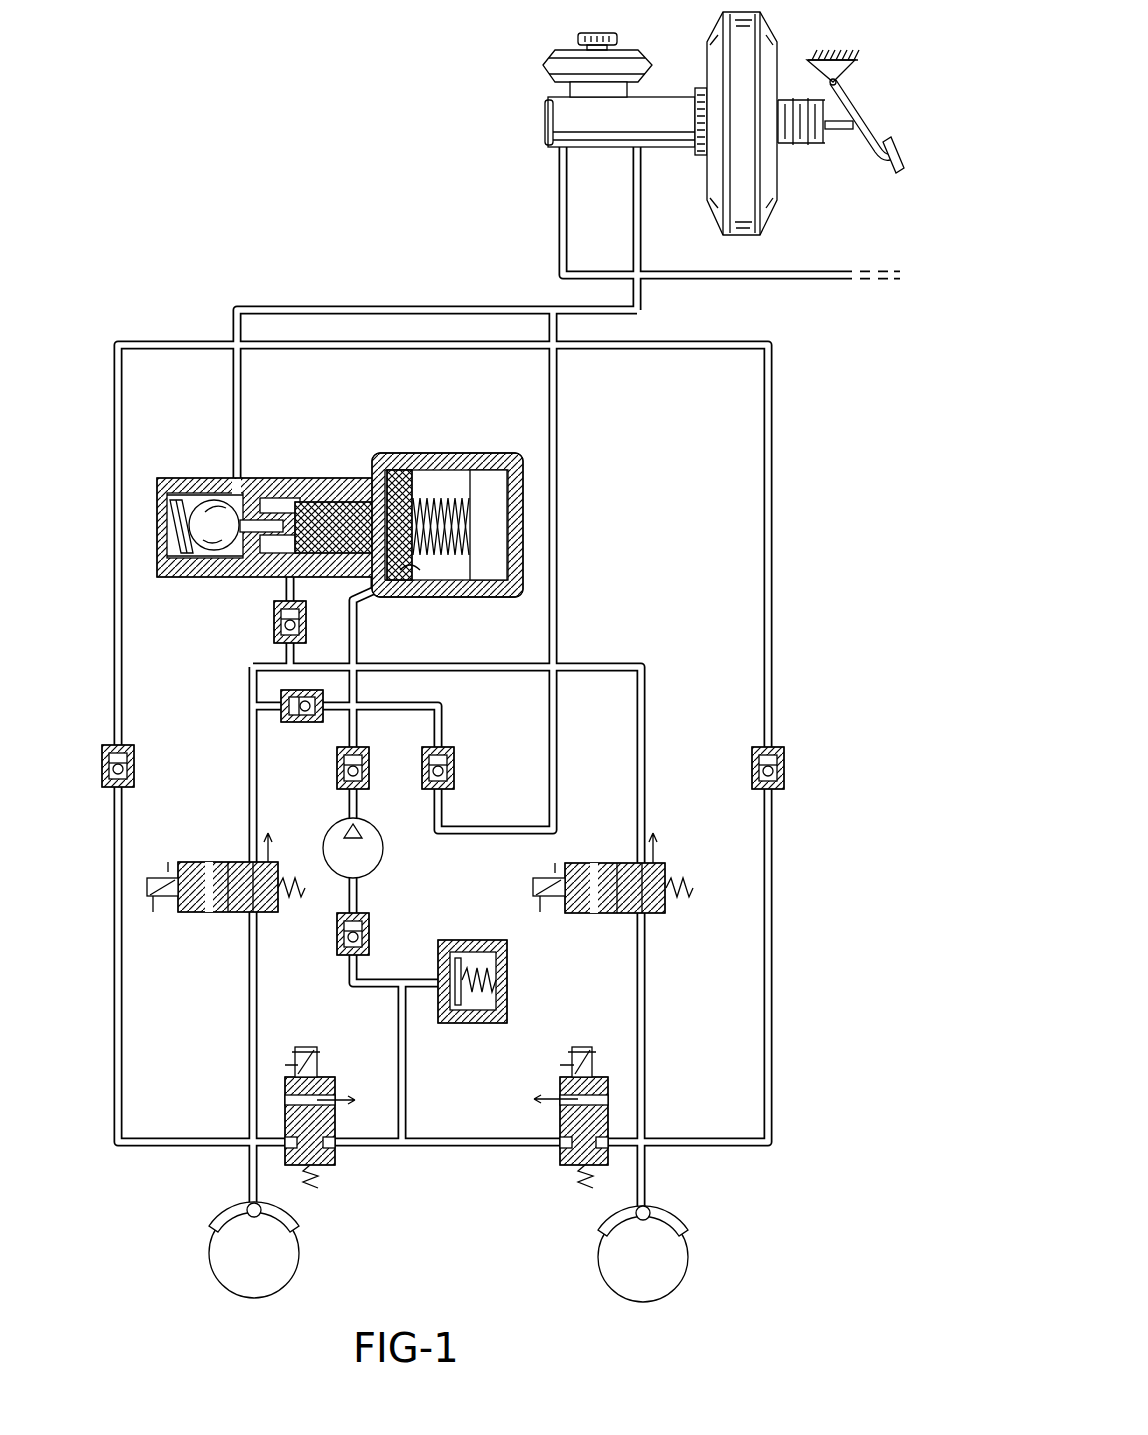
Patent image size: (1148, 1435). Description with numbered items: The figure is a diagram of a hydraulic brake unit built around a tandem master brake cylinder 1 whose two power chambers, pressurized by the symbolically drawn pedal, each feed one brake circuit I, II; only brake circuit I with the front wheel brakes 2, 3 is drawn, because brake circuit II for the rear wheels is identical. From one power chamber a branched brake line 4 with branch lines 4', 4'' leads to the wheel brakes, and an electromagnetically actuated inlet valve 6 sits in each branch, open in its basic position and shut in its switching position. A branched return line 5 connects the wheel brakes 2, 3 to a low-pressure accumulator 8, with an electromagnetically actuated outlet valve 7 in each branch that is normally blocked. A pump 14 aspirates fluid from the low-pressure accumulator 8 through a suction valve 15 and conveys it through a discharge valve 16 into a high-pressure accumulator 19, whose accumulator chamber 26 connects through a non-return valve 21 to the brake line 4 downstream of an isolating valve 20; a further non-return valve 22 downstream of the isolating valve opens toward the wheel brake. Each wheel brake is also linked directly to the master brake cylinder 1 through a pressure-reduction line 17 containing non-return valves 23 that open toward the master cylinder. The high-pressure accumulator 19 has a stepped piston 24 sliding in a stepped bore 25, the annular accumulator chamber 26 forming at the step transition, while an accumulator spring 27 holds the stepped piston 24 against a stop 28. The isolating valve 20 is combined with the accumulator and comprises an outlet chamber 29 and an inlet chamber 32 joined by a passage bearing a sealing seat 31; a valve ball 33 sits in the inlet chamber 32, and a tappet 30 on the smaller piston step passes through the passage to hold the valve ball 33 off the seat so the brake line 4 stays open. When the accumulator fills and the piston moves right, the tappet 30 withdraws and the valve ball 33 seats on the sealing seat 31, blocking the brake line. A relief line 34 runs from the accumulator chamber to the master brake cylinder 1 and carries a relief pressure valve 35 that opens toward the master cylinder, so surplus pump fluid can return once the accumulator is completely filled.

The tandem master brake cylinder 1 is at (545, 112).
The front wheel brake 2 is at (300, 1265).
The front wheel brake 3 is at (690, 1262).
The brake line 4 is at (437, 363).
The branch line 4' is at (225, 935).
The branch line 4'' is at (447, 936).
The return line 5 is at (405, 1085).
The inlet valve 6 is at (225, 862).
The outlet valve 7 is at (335, 1124).
The low-pressure accumulator 8 is at (476, 942).
The pump 14 is at (383, 862).
The suction valve 15 is at (370, 926).
The discharge valve 16 is at (366, 775).
The pressure-reduction line 17 is at (123, 1002).
The high-pressure accumulator 19 is at (456, 518).
The isolating valve 20 is at (264, 519).
The non-return valve 21 is at (303, 722).
The non-return valve 22 is at (303, 632).
The non-return valve 23 is at (128, 770).
The stepped piston 24 is at (396, 483).
The stepped bore 25 is at (430, 577).
The accumulator chamber 26 is at (355, 478).
The accumulator spring 27 is at (492, 592).
The stop 28 is at (378, 600).
The outlet chamber 29 is at (271, 505).
The tappet 30 is at (284, 518).
The sealing seat 31 is at (238, 560).
The inlet chamber 32 is at (228, 497).
The valve ball 33 is at (200, 565).
The relief line 34 is at (558, 530).
The relief pressure valve 35 is at (457, 776).
The brake circuit I is at (642, 231).
The brake circuit II is at (569, 241).